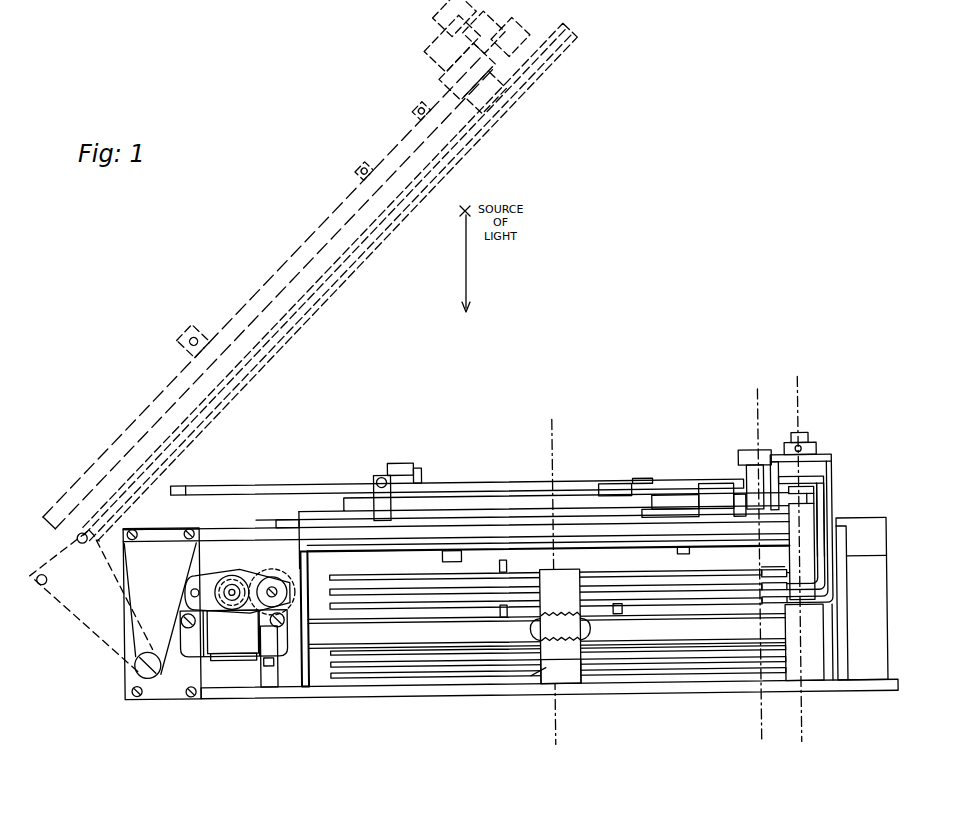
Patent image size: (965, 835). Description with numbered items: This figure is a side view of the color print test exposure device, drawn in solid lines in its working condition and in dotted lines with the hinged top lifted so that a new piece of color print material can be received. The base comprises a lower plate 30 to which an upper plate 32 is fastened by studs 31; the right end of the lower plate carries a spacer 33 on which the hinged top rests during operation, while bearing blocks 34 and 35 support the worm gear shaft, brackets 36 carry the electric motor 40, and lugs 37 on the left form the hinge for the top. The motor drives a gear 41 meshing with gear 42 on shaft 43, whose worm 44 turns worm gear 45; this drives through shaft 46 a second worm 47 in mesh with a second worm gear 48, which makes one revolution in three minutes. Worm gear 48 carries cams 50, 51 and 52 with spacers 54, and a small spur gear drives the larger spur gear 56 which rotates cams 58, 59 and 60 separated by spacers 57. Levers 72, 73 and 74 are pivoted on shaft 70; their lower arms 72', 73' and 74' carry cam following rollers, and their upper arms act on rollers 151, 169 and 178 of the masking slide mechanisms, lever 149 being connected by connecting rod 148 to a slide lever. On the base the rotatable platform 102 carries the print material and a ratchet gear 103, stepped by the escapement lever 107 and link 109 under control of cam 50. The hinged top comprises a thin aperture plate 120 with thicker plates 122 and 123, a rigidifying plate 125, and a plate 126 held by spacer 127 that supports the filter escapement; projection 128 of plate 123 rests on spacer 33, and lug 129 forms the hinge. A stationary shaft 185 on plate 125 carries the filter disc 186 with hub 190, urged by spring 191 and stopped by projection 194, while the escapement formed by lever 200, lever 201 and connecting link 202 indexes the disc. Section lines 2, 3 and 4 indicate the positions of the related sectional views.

The section line 2- 2 is at (554, 582).
The section line 3- 3 is at (758, 568).
The section line 4- 4 is at (799, 560).
The lower plate 30 is at (404, 695).
The studs 31 is at (542, 682).
The upper plate 32 is at (530, 568).
The spacer 33 is at (882, 602).
The bearing block 34 is at (826, 654).
The bearing block 35 is at (302, 568).
The brackets 36 is at (278, 683).
The lugs 37 is at (160, 694).
The motor 40 is at (218, 657).
The gear 41 is at (222, 570).
The gear 42 is at (263, 558).
The shaft 43 is at (272, 584).
The worm 44 is at (234, 633).
The worm gear 45 is at (268, 663).
The shaft 46 is at (546, 631).
The second worm 47 is at (553, 612).
The second worm gear 48 is at (528, 630).
The cam 50 is at (330, 652).
The cam 51 is at (330, 663).
The cam 52 is at (330, 674).
The spacers 54 is at (535, 673).
The spur gear 56 is at (613, 615).
The spacers 57 is at (533, 586).
The cam 58 is at (330, 576).
The cam 59 is at (330, 590).
The cam 60 is at (330, 605).
The shaft 70 is at (806, 437).
The lever 72 is at (802, 551).
The lower arm 72' is at (729, 592).
The lower arm 73' is at (743, 599).
The lower arm 74' is at (759, 606).
The lever 73 is at (868, 519).
The lever 74 is at (854, 531).
The plate 102 is at (332, 546).
The ratchet gear 103 is at (446, 560).
The lever 107 is at (683, 557).
The lever 109 is at (770, 566).
The thin plate 120 is at (228, 536).
The plate 122 is at (206, 533).
The plate 123 is at (838, 528).
The plate 125 is at (357, 517).
The plate 126 is at (668, 496).
The spacer 127 is at (712, 510).
The projection 128 is at (887, 526).
The lug 129 is at (91, 601).
The connecting rod 148 is at (292, 507).
The central part 149 is at (745, 458).
The roller 151 is at (745, 455).
The roller 169 is at (824, 480).
The roller 178 is at (822, 496).
The stationary shaft 185 is at (393, 461).
The rotatable disc 186 is at (462, 494).
The hub 190 is at (424, 474).
The spring 191 is at (374, 479).
The projection 194 is at (179, 485).
The lever 200 is at (636, 483).
The lever 201 is at (740, 500).
The connecting link 202 is at (665, 510).